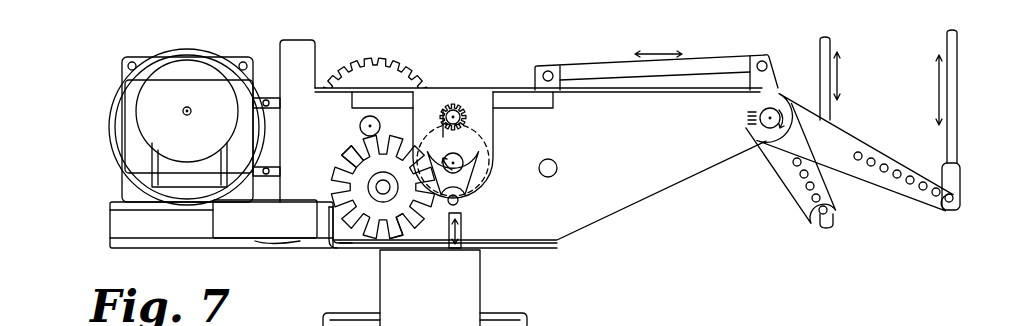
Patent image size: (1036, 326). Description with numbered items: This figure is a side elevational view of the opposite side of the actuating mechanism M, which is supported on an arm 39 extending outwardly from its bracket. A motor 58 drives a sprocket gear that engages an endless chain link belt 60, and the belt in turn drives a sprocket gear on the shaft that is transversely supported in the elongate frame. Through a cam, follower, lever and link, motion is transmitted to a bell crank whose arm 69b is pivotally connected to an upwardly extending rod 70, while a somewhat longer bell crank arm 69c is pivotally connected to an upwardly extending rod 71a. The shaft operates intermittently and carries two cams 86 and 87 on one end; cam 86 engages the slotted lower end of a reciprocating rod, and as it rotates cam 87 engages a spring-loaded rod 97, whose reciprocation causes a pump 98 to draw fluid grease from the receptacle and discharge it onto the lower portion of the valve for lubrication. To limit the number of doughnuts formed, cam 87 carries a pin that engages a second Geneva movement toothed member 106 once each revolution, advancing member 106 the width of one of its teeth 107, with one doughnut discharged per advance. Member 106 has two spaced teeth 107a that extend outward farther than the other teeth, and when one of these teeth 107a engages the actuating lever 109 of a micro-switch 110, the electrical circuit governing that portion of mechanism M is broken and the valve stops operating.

The arm 39 is at (150, 250).
The motor 58 is at (111, 159).
The endless chain link belt 60 is at (267, 176).
The arm of the bell crank 69b is at (797, 193).
The bell crank arm 69c is at (890, 187).
The rod 70 is at (832, 112).
The rod 71a is at (958, 92).
The cam 86 is at (470, 201).
The cam 87 is at (489, 178).
The spring-loaded rod 97 is at (462, 224).
The pump 98 is at (435, 309).
The second Geneva movement toothed member 106 is at (392, 172).
The teeth 107 is at (337, 168).
The spaced teeth 107a is at (336, 158).
The actuating lever 109 is at (338, 239).
The micro-switch 110 is at (274, 227).